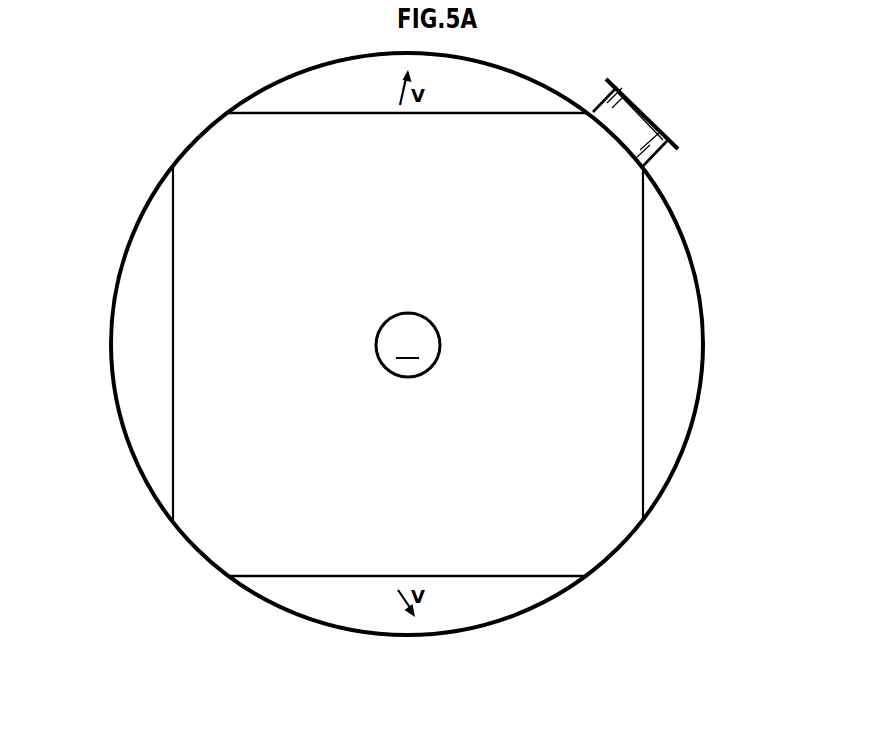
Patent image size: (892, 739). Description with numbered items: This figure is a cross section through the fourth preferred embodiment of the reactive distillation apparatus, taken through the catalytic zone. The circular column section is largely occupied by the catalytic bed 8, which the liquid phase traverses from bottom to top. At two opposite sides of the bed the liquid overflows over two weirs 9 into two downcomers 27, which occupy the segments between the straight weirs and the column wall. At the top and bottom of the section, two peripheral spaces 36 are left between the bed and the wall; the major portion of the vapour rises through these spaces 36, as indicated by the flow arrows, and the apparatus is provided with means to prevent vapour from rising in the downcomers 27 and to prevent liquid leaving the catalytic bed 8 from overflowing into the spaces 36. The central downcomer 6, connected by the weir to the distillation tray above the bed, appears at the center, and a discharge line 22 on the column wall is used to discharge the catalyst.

The downcomer 6 is at (408, 345).
The catalytic bed 8 is at (223, 143).
The weir 9 is at (172, 268).
The discharging line 22 is at (643, 118).
The downcomer 27 is at (672, 328).
The space 36 is at (315, 82).